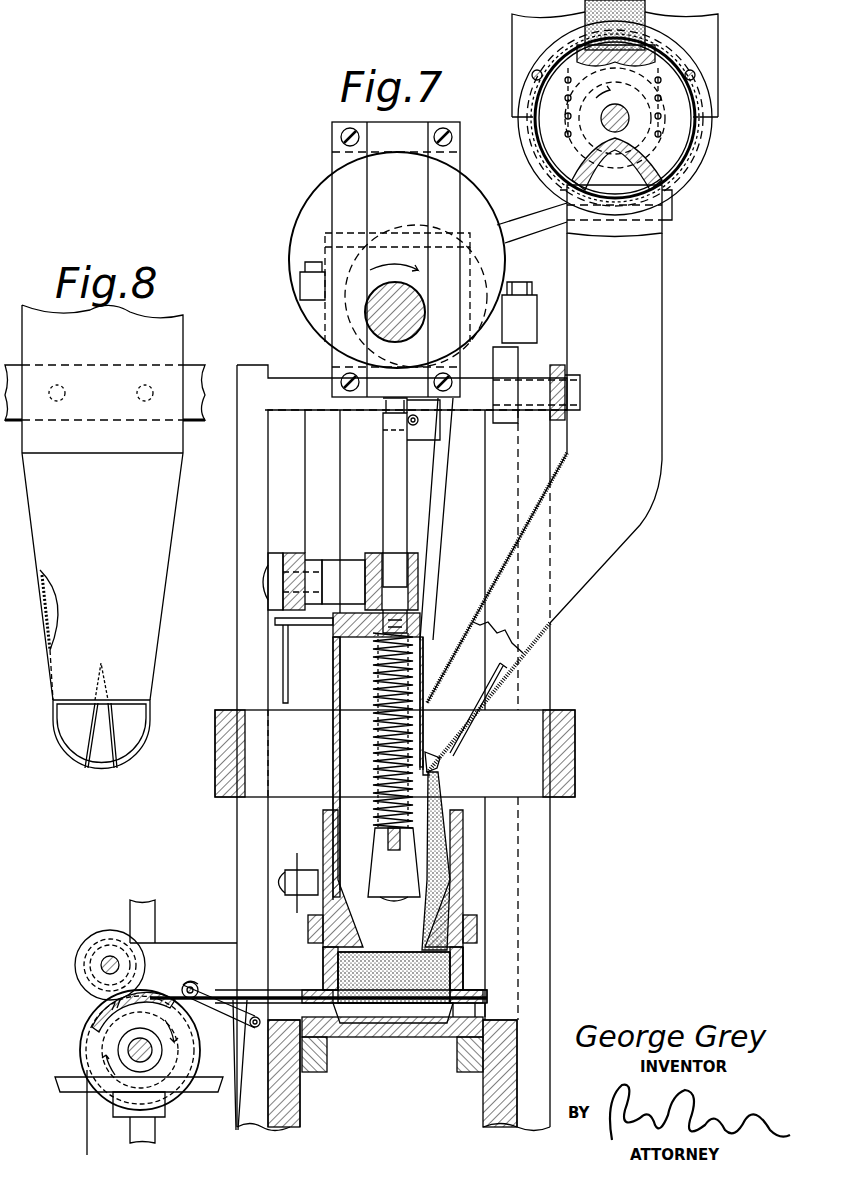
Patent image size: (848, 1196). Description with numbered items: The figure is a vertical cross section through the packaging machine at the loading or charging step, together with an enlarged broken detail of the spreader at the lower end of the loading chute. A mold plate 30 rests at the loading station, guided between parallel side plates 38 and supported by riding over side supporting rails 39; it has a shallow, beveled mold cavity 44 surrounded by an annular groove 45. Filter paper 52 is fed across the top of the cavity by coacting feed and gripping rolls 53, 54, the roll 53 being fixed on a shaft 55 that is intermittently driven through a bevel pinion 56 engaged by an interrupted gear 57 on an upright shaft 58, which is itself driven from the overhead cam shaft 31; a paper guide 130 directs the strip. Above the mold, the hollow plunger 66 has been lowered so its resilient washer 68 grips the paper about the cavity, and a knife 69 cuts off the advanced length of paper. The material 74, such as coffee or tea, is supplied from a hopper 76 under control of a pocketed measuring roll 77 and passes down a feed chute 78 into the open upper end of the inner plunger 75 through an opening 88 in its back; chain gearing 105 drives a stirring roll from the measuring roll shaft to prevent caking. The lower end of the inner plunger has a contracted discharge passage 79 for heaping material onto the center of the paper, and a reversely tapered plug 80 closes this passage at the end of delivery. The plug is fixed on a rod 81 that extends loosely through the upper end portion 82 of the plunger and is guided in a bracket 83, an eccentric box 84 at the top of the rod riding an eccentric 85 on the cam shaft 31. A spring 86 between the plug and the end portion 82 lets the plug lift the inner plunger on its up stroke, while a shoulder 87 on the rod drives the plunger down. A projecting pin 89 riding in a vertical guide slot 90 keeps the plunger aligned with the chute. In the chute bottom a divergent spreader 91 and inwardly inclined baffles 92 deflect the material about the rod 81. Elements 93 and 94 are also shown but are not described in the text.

In FIG. 7, the mold plate 30 is at (397, 1040).
In FIG. 7, the overhead cam shaft 31 is at (427, 306).
In FIG. 7, the side plates 38 is at (300, 1127).
In FIG. 7, the side supporting rails 39 is at (325, 1072).
In FIG. 7, the mold cavity 44 is at (428, 1027).
In FIG. 7, the annular groove 45 is at (487, 1013).
In FIG. 7, the filter paper 52 is at (360, 1012).
In FIG. 7, the feed roll 53 is at (100, 1010).
In FIG. 7, the gripping roll 54 is at (75, 958).
In FIG. 7, the shaft 55 is at (133, 1050).
In FIG. 7, the bevel pinion 56 is at (138, 1050).
In FIG. 7, the interrupted gear 57 is at (65, 1088).
In FIG. 7, the upright shaft 58 is at (148, 918).
In FIG. 7, the hollow plunger 66 is at (463, 972).
In FIG. 7, the resilient washer 68 is at (462, 998).
In FIG. 7, the knife 69 is at (297, 855).
In FIG. 7, the material 74 is at (585, 30).
In FIG. 7, the inner plunger 75 is at (470, 957).
In FIG. 7, the hopper 76 is at (650, 45).
In FIG. 7, the pocketed measuring roll 77 is at (640, 172).
In FIG. 7, the feed chute 78 is at (590, 563).
In FIG. 8, the feed chute 78 is at (105, 502).
In FIG. 7, the discharge passage 79 is at (393, 906).
In FIG. 7, the plug 80 is at (400, 862).
In FIG. 7, the rod 81 is at (393, 462).
In FIG. 7, the upper end portion 82 is at (365, 640).
In FIG. 7, the bracket 83 is at (376, 556).
In FIG. 7, the eccentric box 84 is at (375, 125).
In FIG. 7, the eccentric 85 is at (316, 200).
In FIG. 7, the spring 86 is at (413, 645).
In FIG. 7, the shoulder 87 is at (394, 577).
In FIG. 7, the opening 88 is at (440, 756).
In FIG. 7, the projecting pin 89 is at (276, 622).
In FIG. 7, the vertical guide slot 90 is at (285, 660).
In FIG. 7, the divergent spreader 91 is at (470, 707).
In FIG. 8, the divergent spreader 91 is at (85, 735).
In FIG. 7, the baffles 92 is at (430, 771).
In FIG. 7, the bracket 93 is at (520, 336).
In FIG. 7, the link 94 is at (428, 495).
In FIG. 7, the chain gearing 105 is at (672, 95).
In FIG. 7, the paper guide 130 is at (265, 975).